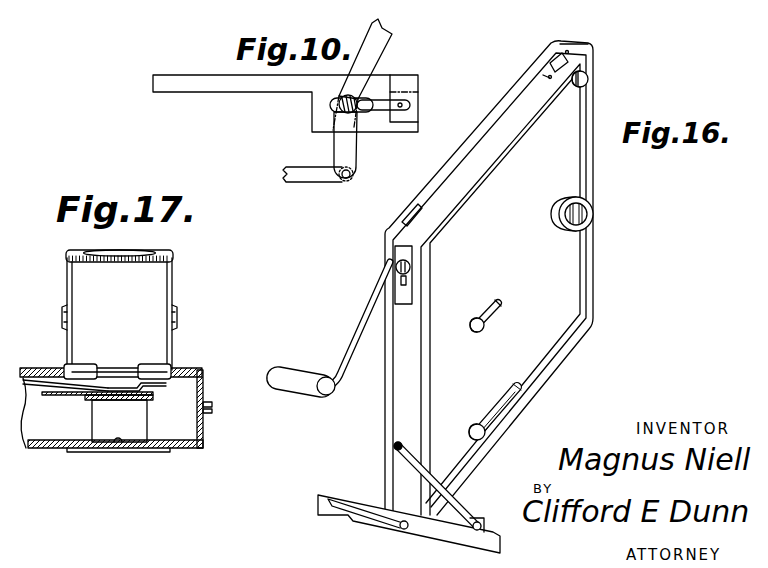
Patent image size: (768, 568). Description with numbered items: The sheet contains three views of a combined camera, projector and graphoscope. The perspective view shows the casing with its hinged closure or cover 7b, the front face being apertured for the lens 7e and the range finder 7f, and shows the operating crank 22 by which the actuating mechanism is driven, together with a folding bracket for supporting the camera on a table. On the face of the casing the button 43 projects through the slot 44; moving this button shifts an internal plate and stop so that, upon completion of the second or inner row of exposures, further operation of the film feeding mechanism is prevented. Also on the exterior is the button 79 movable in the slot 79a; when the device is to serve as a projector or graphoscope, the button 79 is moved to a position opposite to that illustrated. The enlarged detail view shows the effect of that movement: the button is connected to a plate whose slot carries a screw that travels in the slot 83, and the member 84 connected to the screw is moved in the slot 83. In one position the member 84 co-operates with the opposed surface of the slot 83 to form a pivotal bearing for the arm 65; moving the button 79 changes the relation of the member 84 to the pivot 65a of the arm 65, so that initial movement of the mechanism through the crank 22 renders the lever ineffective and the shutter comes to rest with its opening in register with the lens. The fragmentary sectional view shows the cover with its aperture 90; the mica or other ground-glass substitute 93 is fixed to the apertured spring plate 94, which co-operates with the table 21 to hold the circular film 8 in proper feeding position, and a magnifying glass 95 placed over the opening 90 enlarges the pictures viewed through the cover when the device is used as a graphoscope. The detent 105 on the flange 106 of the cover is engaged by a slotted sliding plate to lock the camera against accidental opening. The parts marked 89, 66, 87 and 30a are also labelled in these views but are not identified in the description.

In FIG. 10, the closure or cover 7b is at (100, 2).
In FIG. 10, the bar 89 is at (270, 86).
In FIG. 10, the slot 83 is at (358, 98).
In FIG. 10, the member 84 is at (411, 103).
In FIG. 10, the arm 65 is at (384, 38).
In FIG. 10, the pivot 65a is at (355, 110).
In FIG. 10, the link 66 is at (290, 170).
In FIG. 17, the magnifying glass 95 is at (160, 257).
In FIG. 17, the aperture 90 is at (108, 368).
In FIG. 17, the apertured spring plate 94 is at (80, 385).
In FIG. 17, the mica or ground glass substitute 93 is at (122, 390).
In FIG. 17, the circular film 8 is at (48, 396).
In FIG. 17, the plate or table 21 is at (125, 388).
In FIG. 16, the bracket 87 is at (481, 0).
In FIG. 16, the plate 30a is at (553, 22).
In FIG. 16, the range finder 7f is at (590, 80).
In FIG. 16, the lens 7e is at (594, 213).
In FIG. 16, the detent 105 is at (398, 265).
In FIG. 16, the flange 106 is at (398, 276).
In FIG. 16, the slot 44 is at (498, 300).
In FIG. 16, the button 43 is at (486, 331).
In FIG. 16, the slot 79a is at (546, 379).
In FIG. 16, the button 79 is at (487, 428).
In FIG. 16, the crank 22 is at (363, 309).